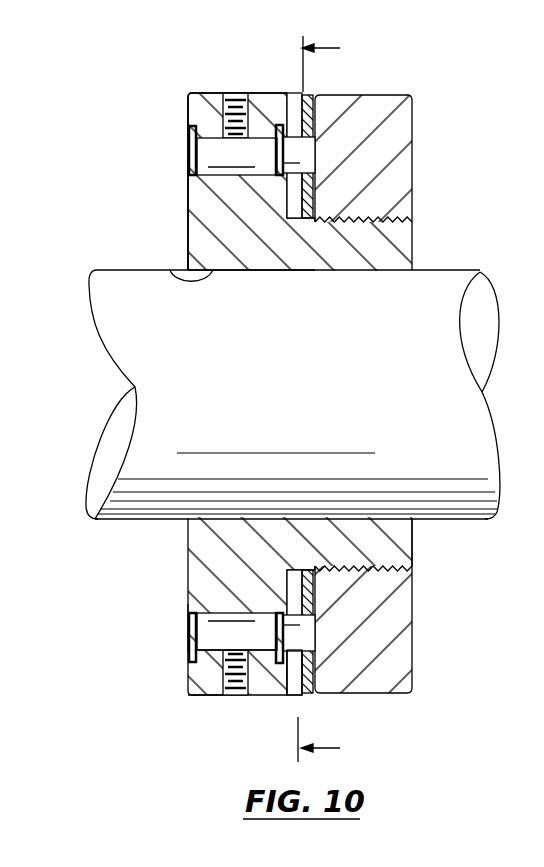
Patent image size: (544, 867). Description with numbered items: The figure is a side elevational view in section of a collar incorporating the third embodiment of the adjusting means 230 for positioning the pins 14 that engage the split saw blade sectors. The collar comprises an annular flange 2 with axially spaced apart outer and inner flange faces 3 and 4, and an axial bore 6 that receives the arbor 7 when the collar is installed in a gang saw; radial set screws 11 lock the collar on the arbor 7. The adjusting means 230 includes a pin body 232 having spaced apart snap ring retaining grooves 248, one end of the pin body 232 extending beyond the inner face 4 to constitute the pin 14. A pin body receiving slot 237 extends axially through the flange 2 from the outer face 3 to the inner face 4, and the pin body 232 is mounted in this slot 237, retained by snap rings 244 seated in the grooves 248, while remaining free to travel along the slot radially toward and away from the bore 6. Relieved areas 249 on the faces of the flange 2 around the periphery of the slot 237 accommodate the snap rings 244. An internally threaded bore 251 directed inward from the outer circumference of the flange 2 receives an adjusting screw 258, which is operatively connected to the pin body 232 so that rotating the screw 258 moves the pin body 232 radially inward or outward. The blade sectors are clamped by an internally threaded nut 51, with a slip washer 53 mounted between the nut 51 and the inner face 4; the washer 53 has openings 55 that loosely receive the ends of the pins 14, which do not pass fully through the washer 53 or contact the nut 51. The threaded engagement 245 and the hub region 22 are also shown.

The annular flange 2 is at (201, 93).
The outer flange face 3 is at (188, 104).
The inner flange face 4 is at (295, 93).
The axial bore 6 is at (170, 270).
The arbor 7 is at (433, 271).
The radial set screw 11 is at (334, 399).
The pin 14 is at (314, 150).
The hub body 22 is at (272, 201).
The internally threaded nut 51 is at (413, 646).
The slip washer 53 is at (310, 96).
The opening 55 is at (318, 140).
The adjusting means 230 is at (184, 169).
The pin body 232 is at (213, 145).
The pin body receiving slot 237 is at (212, 658).
The snap ring 244 is at (190, 131).
The threads 245 is at (392, 562).
The snap ring retaining groove 248 is at (282, 126).
The relieved area 249 is at (187, 604).
The internally threaded bore 251 is at (226, 695).
The adjusting screw 258 is at (238, 92).